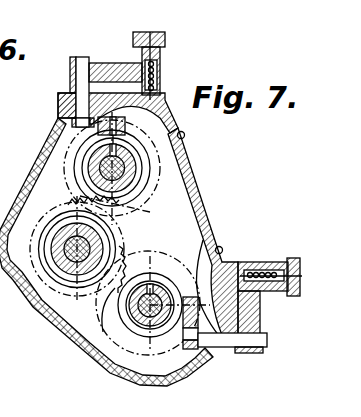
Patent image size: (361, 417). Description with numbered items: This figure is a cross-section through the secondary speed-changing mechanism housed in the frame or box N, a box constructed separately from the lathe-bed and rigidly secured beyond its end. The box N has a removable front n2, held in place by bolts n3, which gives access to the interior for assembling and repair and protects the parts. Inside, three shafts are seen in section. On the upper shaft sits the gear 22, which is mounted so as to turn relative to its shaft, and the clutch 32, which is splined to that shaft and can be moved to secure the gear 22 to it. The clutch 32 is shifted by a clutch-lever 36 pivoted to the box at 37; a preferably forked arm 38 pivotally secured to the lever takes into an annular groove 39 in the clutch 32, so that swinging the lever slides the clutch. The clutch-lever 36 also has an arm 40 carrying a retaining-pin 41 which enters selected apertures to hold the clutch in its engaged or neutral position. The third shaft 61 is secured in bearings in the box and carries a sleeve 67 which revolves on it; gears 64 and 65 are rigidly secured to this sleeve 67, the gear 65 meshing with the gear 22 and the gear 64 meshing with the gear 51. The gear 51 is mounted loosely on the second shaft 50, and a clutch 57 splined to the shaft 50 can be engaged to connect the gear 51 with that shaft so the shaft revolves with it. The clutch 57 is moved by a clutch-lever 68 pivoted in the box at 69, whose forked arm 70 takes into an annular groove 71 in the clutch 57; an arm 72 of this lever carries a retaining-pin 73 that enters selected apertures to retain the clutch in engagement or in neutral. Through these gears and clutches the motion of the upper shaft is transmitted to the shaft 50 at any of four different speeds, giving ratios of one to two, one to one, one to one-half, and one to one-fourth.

The frame or box N is at (22, 185).
The removable front n2 is at (204, 195).
The bolts n3 is at (186, 133).
The pivot 37 is at (80, 105).
The arm 40 is at (108, 66).
The retaining-pin 41 is at (162, 33).
The forked arm 38 is at (126, 125).
The clutch-lever 36 is at (97, 168).
The clutch 32 is at (143, 178).
The gear 65 is at (60, 191).
The annular groove 39 is at (132, 186).
The gear 22 is at (125, 206).
The gear 64 is at (50, 217).
The third shaft 61 is at (76, 292).
The annular groove 71 is at (124, 307).
The sleeve 67 is at (50, 280).
The second shaft 50 is at (137, 323).
The forked arm 70 is at (153, 284).
The clutch 57 is at (140, 275).
The gear 51 is at (182, 267).
The clutch-lever 68 is at (183, 342).
The arm 72 is at (259, 325).
The retaining-pin 73 is at (293, 258).
The pivot 69 is at (222, 360).